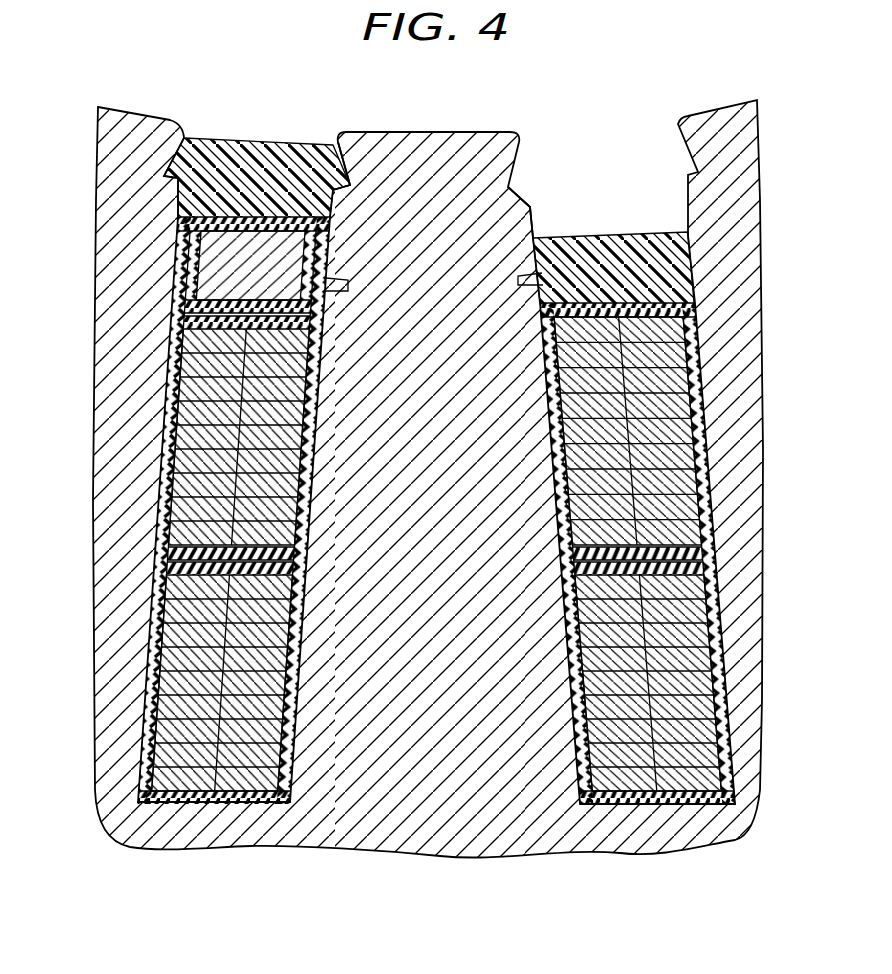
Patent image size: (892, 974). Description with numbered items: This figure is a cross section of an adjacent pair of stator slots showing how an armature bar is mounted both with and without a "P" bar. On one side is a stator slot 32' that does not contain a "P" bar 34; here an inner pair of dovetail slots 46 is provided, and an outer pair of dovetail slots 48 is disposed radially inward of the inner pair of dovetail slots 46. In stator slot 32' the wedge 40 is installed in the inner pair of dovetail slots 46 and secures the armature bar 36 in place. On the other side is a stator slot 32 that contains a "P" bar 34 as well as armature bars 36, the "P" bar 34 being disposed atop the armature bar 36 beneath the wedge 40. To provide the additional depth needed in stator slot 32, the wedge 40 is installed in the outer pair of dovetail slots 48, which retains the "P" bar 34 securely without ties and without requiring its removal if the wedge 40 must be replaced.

The stator slot 32 is at (234, 431).
The stator slot 32' is at (637, 445).
The "P" bar 34 is at (218, 263).
The armature bar 36 is at (193, 413).
The wedge 40 is at (288, 157).
The inner pair of dovetail slots 46 is at (336, 283).
The outer pair of dovetail slots 48 is at (352, 172).